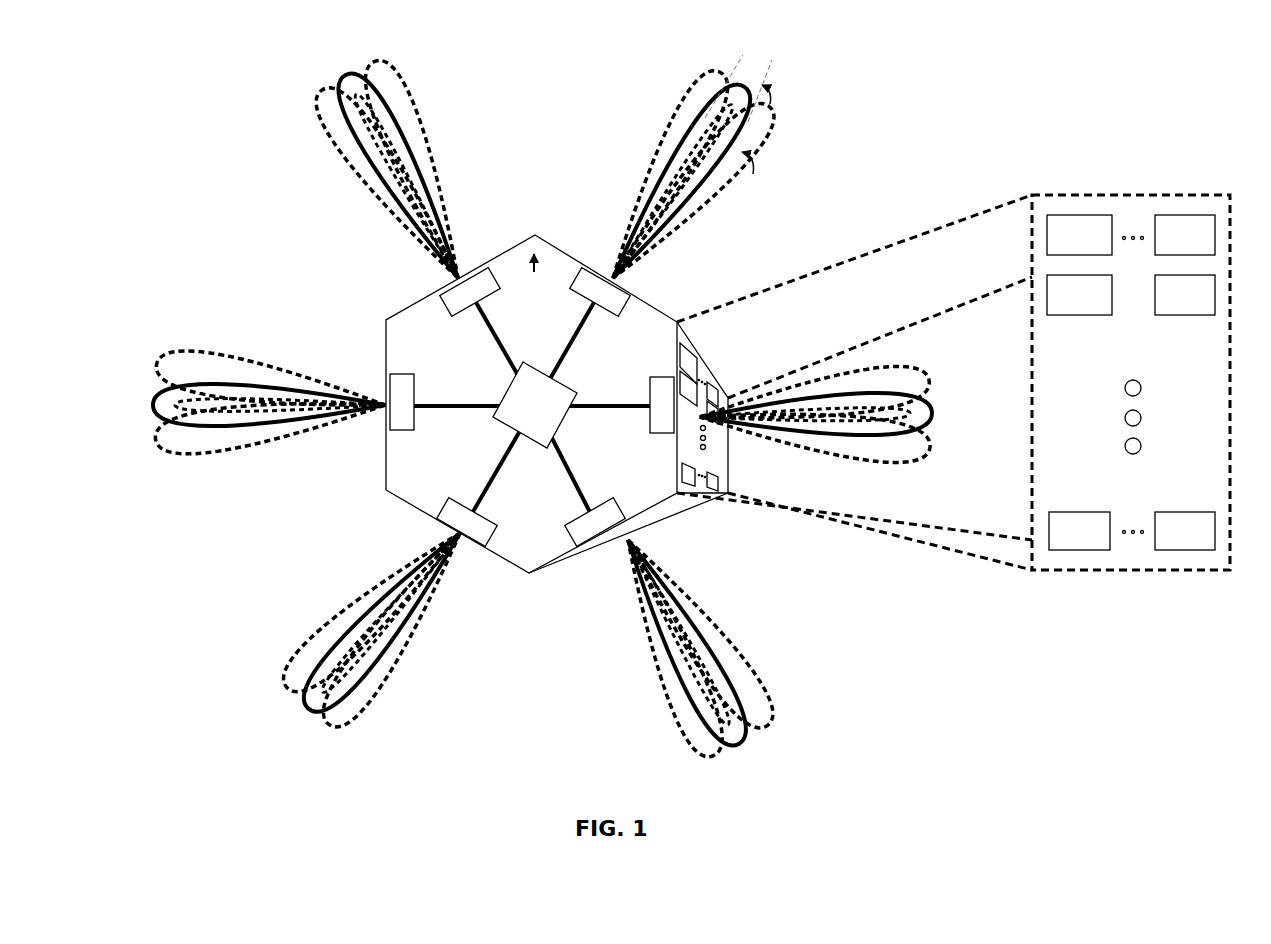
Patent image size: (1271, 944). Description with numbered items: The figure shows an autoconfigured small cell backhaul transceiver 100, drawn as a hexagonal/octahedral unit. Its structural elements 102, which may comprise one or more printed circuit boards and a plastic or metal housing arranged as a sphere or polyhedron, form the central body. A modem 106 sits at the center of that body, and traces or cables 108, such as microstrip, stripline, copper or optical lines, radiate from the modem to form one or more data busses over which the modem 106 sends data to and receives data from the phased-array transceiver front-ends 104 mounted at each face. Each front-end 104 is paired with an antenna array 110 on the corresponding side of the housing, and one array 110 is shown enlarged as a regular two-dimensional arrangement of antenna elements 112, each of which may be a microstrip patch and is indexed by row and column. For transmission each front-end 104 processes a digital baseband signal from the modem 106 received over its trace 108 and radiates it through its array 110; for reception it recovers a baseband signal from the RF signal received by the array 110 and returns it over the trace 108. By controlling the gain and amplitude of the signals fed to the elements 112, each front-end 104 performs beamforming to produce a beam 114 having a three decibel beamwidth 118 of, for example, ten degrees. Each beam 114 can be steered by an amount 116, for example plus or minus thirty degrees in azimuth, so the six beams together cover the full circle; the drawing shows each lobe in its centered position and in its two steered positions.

The small cell backhaul transceiver 100 is at (285, 250).
The structural elements 102 is at (683, 408).
The phased-array transceiver front-ends 104 is at (531, 408).
The modem 106 is at (535, 405).
The traces or cables forming busses 108 is at (489, 321).
The antenna arrays 110 is at (411, 306).
The antenna elements 112 is at (953, 382).
The beam 114 is at (537, 407).
The steering amount 116 is at (730, 62).
The 3 dB beamwidth 118 is at (694, 117).